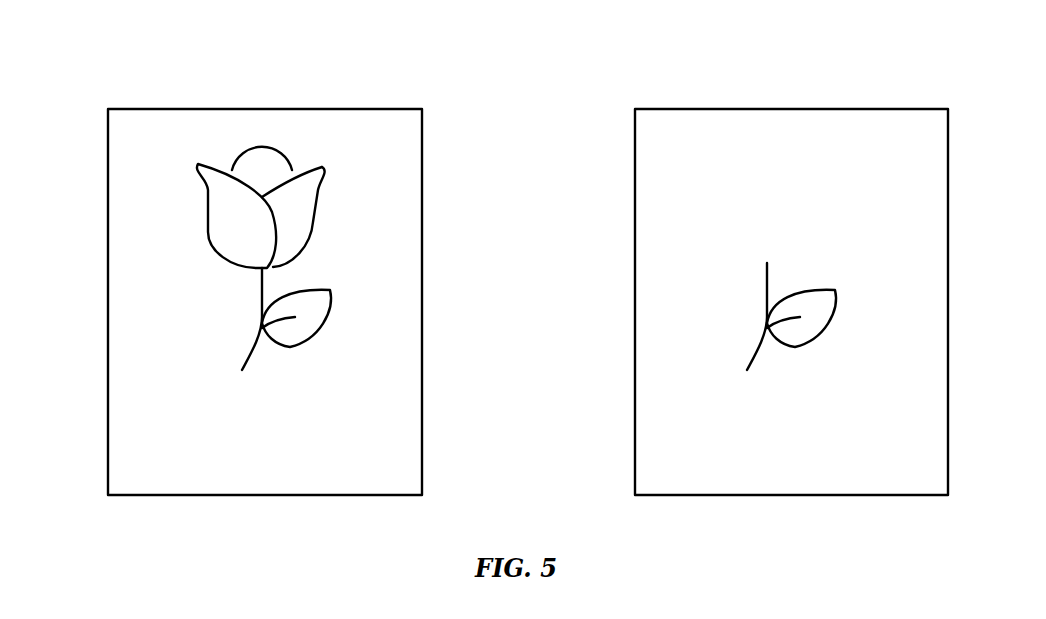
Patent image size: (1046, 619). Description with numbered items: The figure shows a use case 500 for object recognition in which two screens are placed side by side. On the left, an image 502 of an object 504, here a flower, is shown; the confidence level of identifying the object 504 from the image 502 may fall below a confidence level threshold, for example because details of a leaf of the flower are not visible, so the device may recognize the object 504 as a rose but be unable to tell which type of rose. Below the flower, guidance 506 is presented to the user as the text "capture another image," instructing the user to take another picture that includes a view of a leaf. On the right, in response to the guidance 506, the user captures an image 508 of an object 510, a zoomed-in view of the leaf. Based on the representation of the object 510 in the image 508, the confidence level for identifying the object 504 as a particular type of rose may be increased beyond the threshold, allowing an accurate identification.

The use case 500 is at (128, 28).
The image 502 is at (265, 109).
The object 504 is at (208, 208).
The guidance 506 is at (205, 445).
The image 508 is at (790, 109).
The object 510 is at (766, 300).